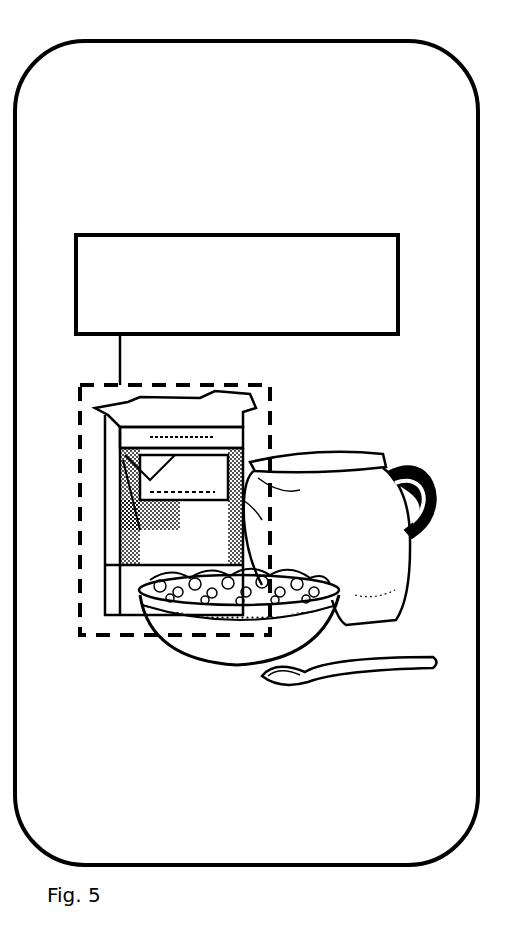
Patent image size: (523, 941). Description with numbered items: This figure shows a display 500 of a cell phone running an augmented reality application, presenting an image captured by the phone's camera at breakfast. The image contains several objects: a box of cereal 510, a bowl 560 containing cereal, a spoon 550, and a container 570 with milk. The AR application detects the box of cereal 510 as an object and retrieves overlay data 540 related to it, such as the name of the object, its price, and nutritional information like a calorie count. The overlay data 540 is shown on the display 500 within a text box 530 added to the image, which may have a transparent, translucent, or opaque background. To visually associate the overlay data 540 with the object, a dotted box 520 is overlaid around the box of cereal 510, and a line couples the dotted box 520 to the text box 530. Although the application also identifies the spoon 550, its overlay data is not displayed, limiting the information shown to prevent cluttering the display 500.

The display 500 is at (197, 34).
The box of cereal 510 is at (120, 630).
The dotted box 520 is at (286, 420).
The text box 530 is at (237, 289).
The overlay data 540 is at (223, 258).
The spoon 550 is at (393, 680).
The bowl 560 is at (225, 668).
The container 570 is at (350, 444).